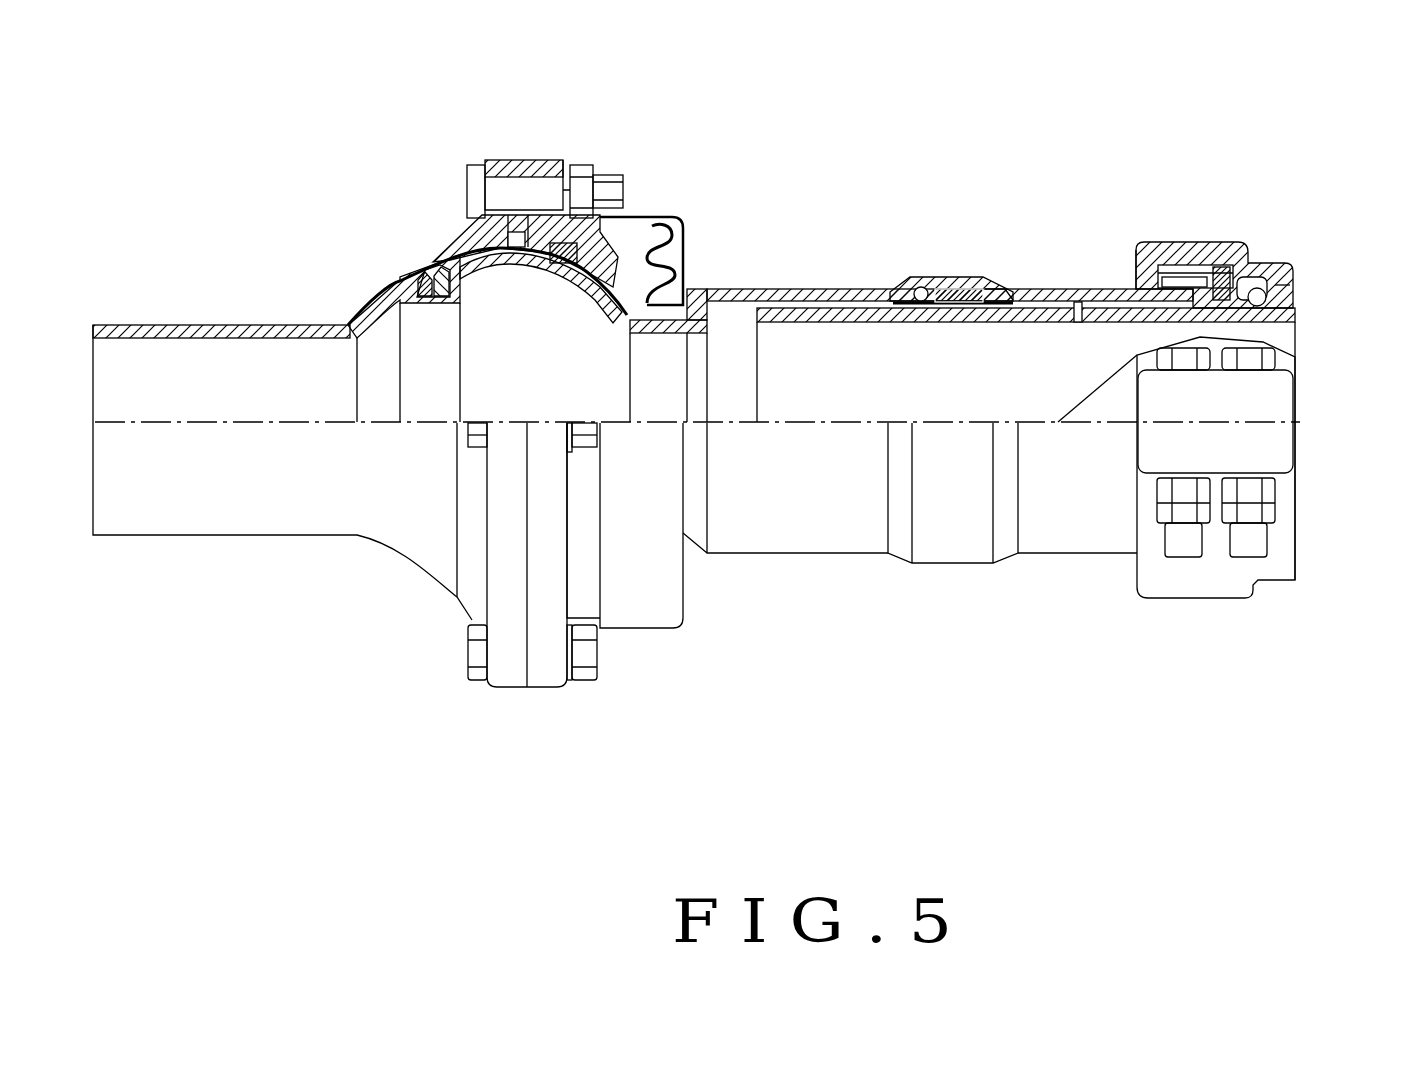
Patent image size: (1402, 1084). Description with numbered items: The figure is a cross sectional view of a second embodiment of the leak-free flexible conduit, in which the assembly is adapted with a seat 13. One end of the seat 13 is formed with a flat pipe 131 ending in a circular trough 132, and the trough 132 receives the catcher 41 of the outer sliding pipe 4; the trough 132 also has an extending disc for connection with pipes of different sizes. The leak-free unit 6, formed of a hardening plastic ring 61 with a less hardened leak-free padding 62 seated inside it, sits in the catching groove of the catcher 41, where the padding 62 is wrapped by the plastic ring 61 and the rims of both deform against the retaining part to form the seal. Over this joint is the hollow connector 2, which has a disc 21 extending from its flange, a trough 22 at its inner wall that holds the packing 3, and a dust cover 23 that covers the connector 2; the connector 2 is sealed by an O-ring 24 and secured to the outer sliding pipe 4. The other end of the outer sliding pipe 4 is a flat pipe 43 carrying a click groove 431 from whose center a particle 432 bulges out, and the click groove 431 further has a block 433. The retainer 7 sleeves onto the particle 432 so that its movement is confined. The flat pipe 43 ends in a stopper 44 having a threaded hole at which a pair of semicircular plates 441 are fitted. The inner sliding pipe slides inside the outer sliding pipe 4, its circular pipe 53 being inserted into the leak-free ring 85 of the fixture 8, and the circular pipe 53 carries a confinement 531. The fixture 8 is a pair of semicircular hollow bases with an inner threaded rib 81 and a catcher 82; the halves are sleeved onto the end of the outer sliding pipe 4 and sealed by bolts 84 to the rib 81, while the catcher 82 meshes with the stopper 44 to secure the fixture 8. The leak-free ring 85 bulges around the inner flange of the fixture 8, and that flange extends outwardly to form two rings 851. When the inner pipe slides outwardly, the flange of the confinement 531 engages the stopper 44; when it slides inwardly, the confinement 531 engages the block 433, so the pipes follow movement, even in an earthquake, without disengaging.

The seat 13 is at (275, 312).
The flat pipe 131 is at (177, 330).
The circular trough 132 is at (368, 340).
The leak-free unit 6 is at (421, 203).
The plastic ring 61 is at (433, 282).
The leak-free padding 62 is at (417, 277).
The connector 2 is at (620, 243).
The packing 3 is at (607, 240).
The disc 21 is at (542, 162).
The trough 22 is at (572, 233).
The dust cover 23 is at (683, 258).
The O-ring 24 is at (508, 258).
The outer sliding pipe 4 is at (826, 300).
The catcher 41 is at (627, 290).
The flat pipe 43 is at (853, 298).
The click groove 431 is at (922, 300).
The particle 432 is at (977, 293).
The block 433 is at (998, 302).
The retainer 7 is at (972, 240).
The circular pipe 53 is at (960, 547).
The confinement 531 is at (1078, 302).
The fixture 8 is at (1220, 386).
The inner threaded rib 81 is at (1283, 292).
The catcher 82 is at (1143, 280).
The bolts 84 is at (1247, 513).
The leak-free ring 85 is at (1242, 287).
The rings 851 is at (1285, 265).
The stopper 44 is at (1165, 260).
The semicircular plates 441 is at (1218, 273).